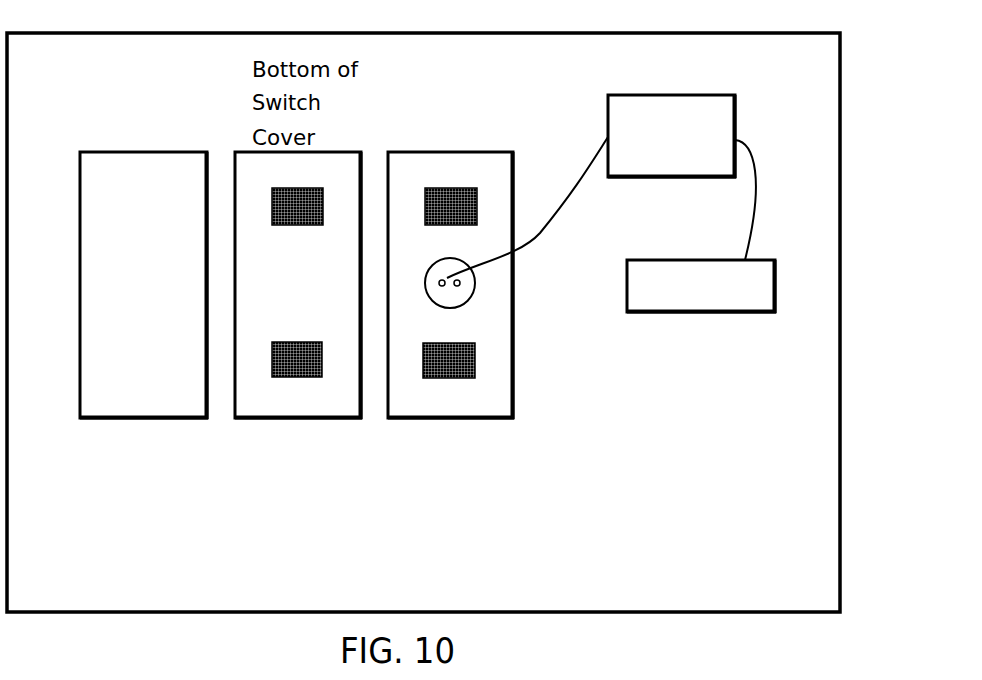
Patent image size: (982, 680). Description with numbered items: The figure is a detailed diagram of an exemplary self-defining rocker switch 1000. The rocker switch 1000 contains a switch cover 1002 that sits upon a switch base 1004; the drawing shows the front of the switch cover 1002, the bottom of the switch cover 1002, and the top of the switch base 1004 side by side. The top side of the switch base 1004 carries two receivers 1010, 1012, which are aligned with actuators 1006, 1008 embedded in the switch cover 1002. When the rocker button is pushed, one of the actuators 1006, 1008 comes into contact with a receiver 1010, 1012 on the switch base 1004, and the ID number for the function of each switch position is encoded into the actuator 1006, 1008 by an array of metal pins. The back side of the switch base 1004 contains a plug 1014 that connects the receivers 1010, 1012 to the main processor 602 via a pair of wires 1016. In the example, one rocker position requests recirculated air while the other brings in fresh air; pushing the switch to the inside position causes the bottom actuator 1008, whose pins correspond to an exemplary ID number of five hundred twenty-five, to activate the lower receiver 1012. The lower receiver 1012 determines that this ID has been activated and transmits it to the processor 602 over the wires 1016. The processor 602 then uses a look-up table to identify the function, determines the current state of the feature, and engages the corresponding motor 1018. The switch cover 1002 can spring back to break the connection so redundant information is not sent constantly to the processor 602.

The rocker switch 1000 is at (809, 22).
The switch cover 1002 is at (100, 358).
The switch base 1004 is at (495, 375).
The actuator 1006 is at (300, 205).
The actuator 1008 is at (322, 365).
The receiver 1010 is at (470, 200).
The receiver 1012 is at (475, 378).
The plug 1014 is at (463, 292).
The pair of wires 1016 is at (577, 188).
The motor 1018 is at (670, 260).
The main processor 602 is at (735, 117).